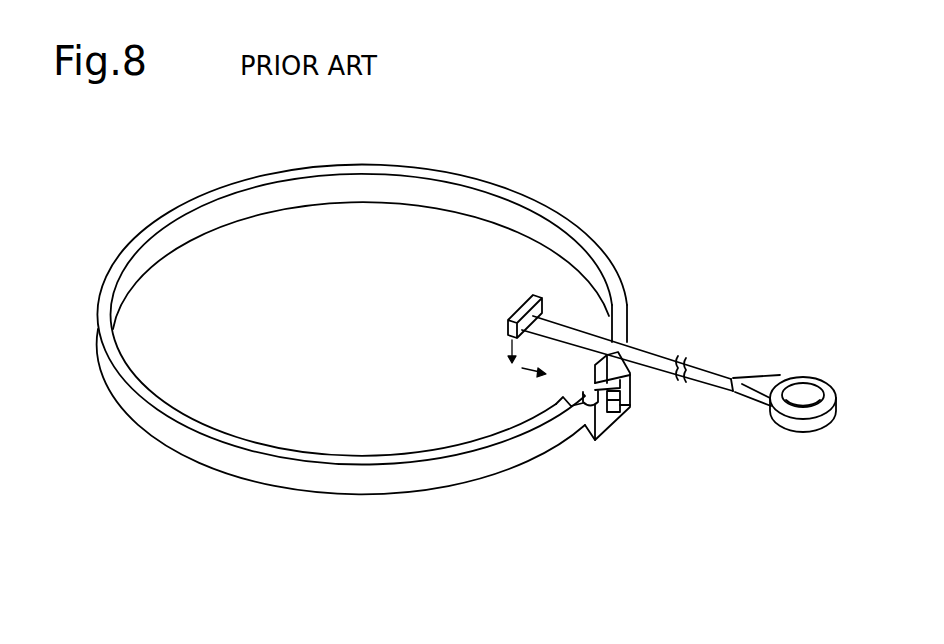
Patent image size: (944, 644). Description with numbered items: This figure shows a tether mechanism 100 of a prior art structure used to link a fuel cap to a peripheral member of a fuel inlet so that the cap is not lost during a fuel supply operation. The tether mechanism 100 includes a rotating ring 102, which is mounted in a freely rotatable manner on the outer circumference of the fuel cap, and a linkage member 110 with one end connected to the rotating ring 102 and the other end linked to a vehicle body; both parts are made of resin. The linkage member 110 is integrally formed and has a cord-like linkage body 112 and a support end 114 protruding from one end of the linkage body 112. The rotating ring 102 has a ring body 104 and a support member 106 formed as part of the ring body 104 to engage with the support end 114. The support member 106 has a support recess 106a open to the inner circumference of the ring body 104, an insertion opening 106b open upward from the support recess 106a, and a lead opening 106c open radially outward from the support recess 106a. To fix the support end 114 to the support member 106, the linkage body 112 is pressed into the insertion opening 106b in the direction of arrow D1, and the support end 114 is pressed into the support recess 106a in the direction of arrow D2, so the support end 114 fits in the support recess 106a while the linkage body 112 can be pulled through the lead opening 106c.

The tether mechanism 100 is at (680, 228).
The rotating ring 102 is at (552, 545).
The ring body 104 is at (442, 478).
The support member 106 is at (552, 453).
The support recess 106a is at (573, 413).
The insertion opening 106b is at (620, 393).
The lead opening 106c is at (624, 414).
The linkage member 110 is at (713, 358).
The linkage body 112 is at (655, 351).
The support end 114 is at (522, 313).
The arrow D1 is at (506, 354).
The arrow D2 is at (527, 375).